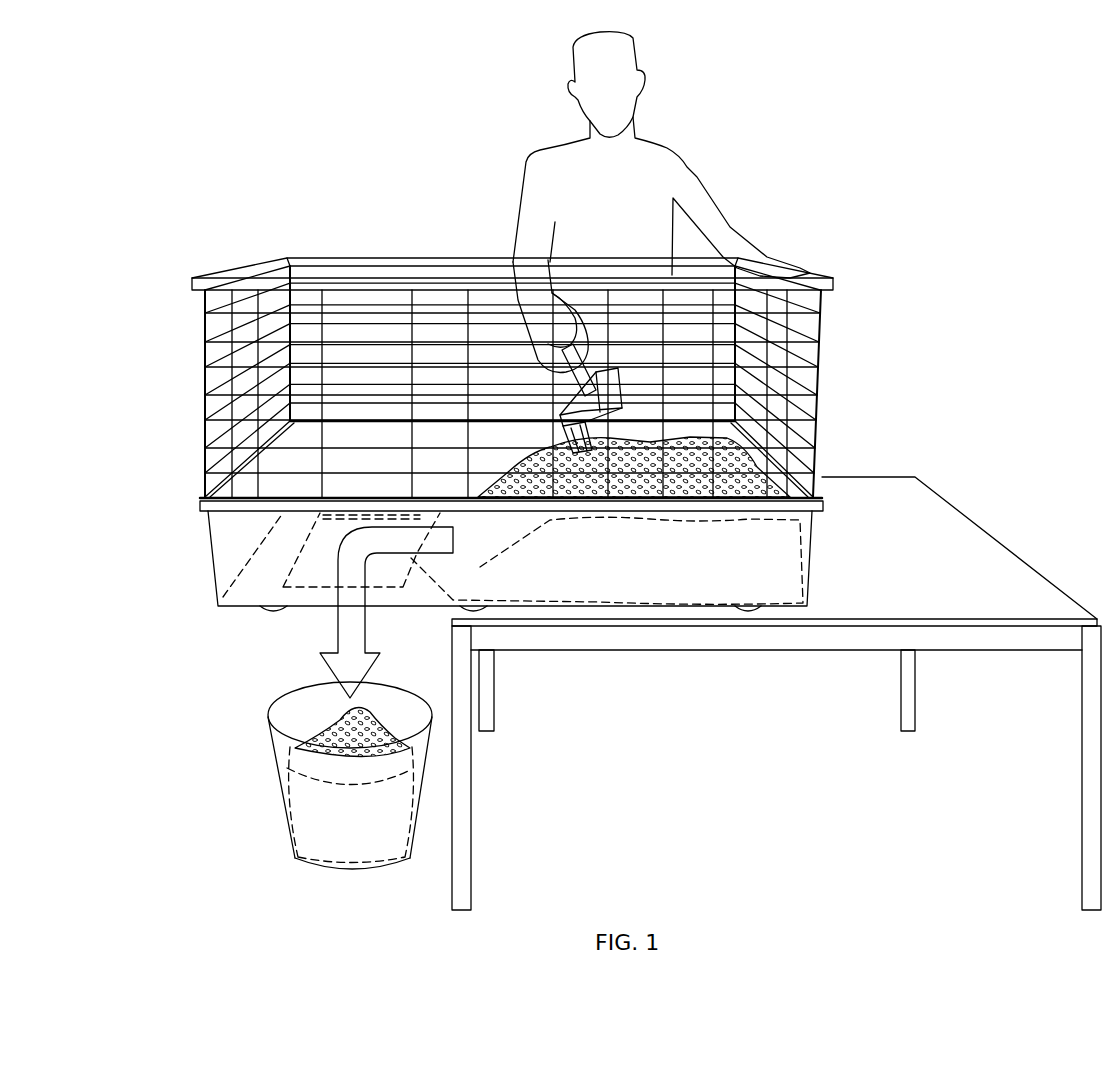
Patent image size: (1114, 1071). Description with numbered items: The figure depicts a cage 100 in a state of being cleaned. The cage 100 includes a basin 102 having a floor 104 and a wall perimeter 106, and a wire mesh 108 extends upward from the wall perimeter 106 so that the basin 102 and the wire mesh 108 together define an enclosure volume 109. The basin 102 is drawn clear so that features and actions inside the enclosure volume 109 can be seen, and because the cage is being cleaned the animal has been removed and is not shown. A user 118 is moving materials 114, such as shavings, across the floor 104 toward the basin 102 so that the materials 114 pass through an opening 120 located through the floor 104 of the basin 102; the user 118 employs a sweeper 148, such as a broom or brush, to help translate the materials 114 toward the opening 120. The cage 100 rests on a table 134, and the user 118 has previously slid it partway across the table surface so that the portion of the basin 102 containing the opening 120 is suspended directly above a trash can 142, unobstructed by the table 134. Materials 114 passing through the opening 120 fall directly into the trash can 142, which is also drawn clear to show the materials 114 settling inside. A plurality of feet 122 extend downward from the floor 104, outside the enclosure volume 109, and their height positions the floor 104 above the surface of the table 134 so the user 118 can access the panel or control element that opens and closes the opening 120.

The cage 100 is at (537, 380).
The basin 102 is at (479, 599).
The floor 104 is at (331, 555).
The wall perimeter 106 is at (258, 490).
The wire mesh 108 is at (218, 323).
The enclosure volume 109 is at (275, 272).
The materials 114 is at (310, 670).
The user 118 is at (672, 147).
The opening 120 is at (317, 563).
The feet 122 is at (537, 645).
The table 134 is at (965, 535).
The trash can 142 is at (272, 743).
The sweeper 148 is at (518, 335).